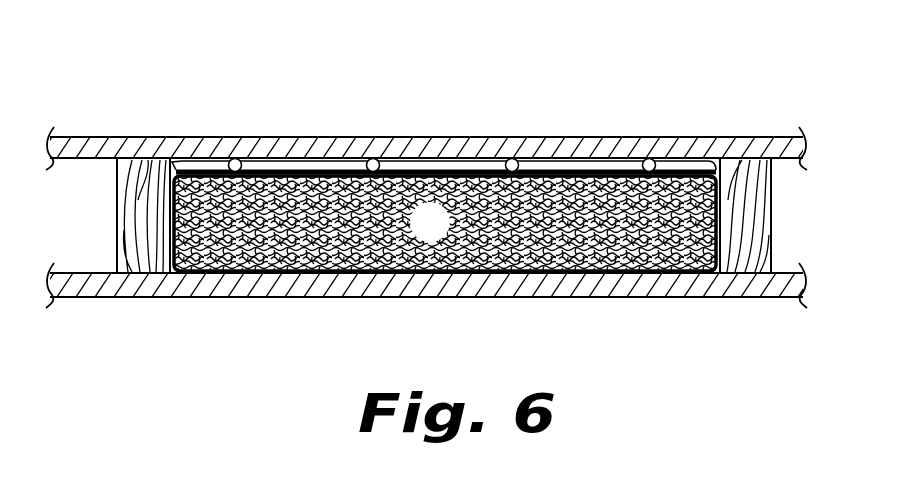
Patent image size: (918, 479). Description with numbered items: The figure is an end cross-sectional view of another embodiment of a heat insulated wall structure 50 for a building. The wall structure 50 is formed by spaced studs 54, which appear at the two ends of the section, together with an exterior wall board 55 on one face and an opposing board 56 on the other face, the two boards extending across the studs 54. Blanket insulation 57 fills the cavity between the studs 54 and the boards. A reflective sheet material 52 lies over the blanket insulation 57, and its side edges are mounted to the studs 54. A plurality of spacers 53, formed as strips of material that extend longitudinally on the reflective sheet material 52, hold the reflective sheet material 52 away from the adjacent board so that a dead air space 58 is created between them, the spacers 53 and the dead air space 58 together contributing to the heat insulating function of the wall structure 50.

The heat insulated wall structure 50 is at (204, 108).
The reflective sheet material 52 is at (444, 164).
The spacers 53 is at (645, 160).
The studs 54 is at (138, 212).
The exterior wall board 55 is at (517, 285).
The top skin sheet 56 is at (300, 147).
The blanket insulation 57 is at (442, 233).
The dead air space 58 is at (680, 168).